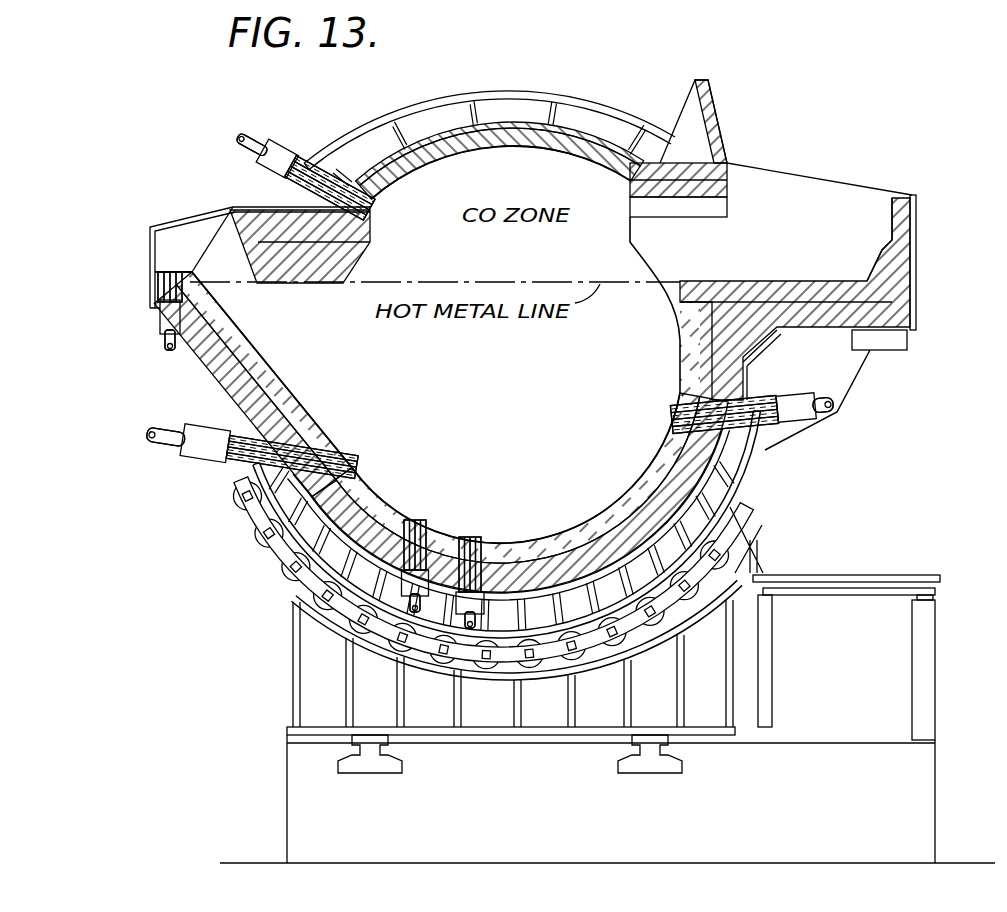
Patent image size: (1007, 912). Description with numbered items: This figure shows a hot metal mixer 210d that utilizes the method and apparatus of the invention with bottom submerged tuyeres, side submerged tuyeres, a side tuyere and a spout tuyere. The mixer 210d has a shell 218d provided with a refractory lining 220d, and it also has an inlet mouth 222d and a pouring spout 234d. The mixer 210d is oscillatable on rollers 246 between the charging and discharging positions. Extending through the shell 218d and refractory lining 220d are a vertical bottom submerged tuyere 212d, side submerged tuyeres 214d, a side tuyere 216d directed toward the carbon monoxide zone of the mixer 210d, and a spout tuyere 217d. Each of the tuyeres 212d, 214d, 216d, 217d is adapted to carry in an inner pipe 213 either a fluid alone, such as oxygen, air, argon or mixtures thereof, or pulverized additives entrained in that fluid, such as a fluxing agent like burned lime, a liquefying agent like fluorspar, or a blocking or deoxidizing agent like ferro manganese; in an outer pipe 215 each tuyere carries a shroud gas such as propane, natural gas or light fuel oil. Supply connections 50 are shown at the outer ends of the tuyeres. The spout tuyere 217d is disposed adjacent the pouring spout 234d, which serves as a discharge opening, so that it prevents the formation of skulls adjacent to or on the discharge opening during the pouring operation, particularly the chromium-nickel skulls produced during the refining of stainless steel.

The hot metal mixer 210d is at (573, 92).
The supply pipe 50 is at (247, 140).
The side tuyere 216d is at (303, 152).
The outer pipe 215 is at (373, 197).
The inner pipe 213 is at (373, 220).
The pouring spout 234d is at (202, 227).
The spout tuyere 217d is at (152, 320).
The side submerged tuyeres 214d is at (203, 421).
The rollers 246 is at (266, 542).
The vertical bottom submerged tuyere 212d is at (463, 524).
The inlet mouth 222d is at (889, 210).
The refractory lining 220d is at (900, 252).
The shell 218d is at (912, 272).